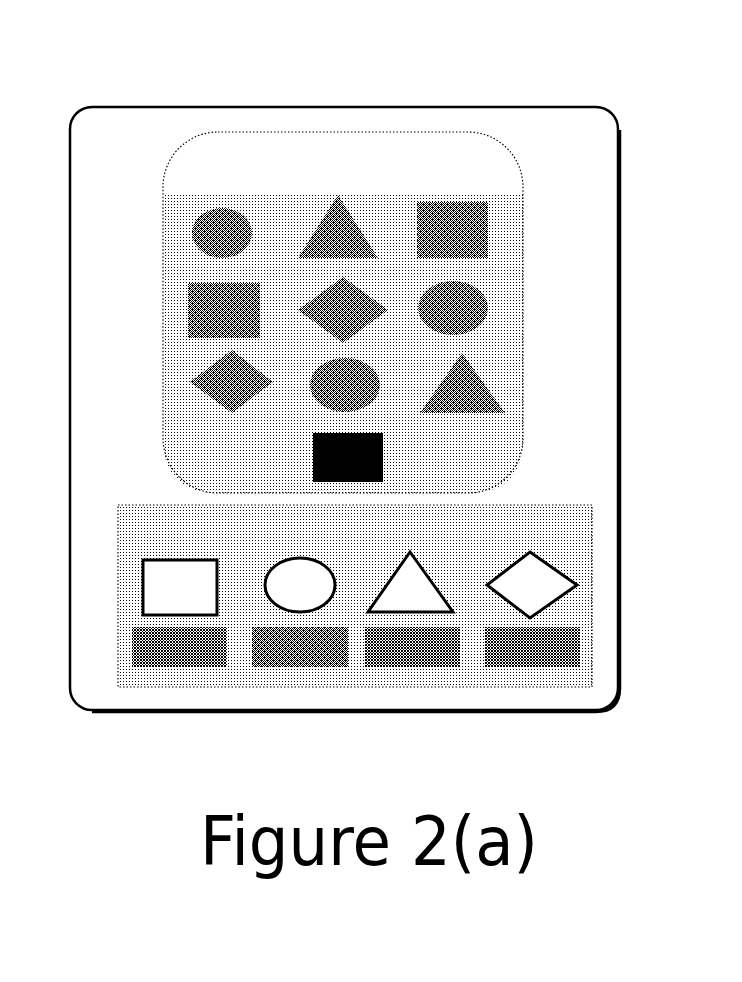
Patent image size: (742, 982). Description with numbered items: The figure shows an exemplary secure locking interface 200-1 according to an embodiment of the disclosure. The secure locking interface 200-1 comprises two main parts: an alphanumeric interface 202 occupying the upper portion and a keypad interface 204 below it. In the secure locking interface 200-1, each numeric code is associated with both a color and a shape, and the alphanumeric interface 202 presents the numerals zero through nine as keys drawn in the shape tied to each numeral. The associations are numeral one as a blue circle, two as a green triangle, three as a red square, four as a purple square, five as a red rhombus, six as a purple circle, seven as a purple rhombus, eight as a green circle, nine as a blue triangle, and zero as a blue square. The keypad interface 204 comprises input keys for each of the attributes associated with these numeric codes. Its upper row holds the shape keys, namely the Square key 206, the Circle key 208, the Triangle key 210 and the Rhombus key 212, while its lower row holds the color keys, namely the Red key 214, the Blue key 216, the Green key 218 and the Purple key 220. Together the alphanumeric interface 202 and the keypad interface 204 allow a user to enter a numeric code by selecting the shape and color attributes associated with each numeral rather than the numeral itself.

The secure locking interface 200-1 is at (287, 82).
The alphanumeric interface 202 is at (359, 188).
The keypad interface 204 is at (477, 533).
The Square input key 206 is at (143, 560).
The Circle input key 208 is at (306, 560).
The Triangle input key 210 is at (428, 572).
The Rhombus input key 212 is at (575, 584).
The Red input key 214 is at (195, 667).
The Blue input key 216 is at (327, 667).
The Green input key 218 is at (442, 667).
The Purple input key 220 is at (552, 667).